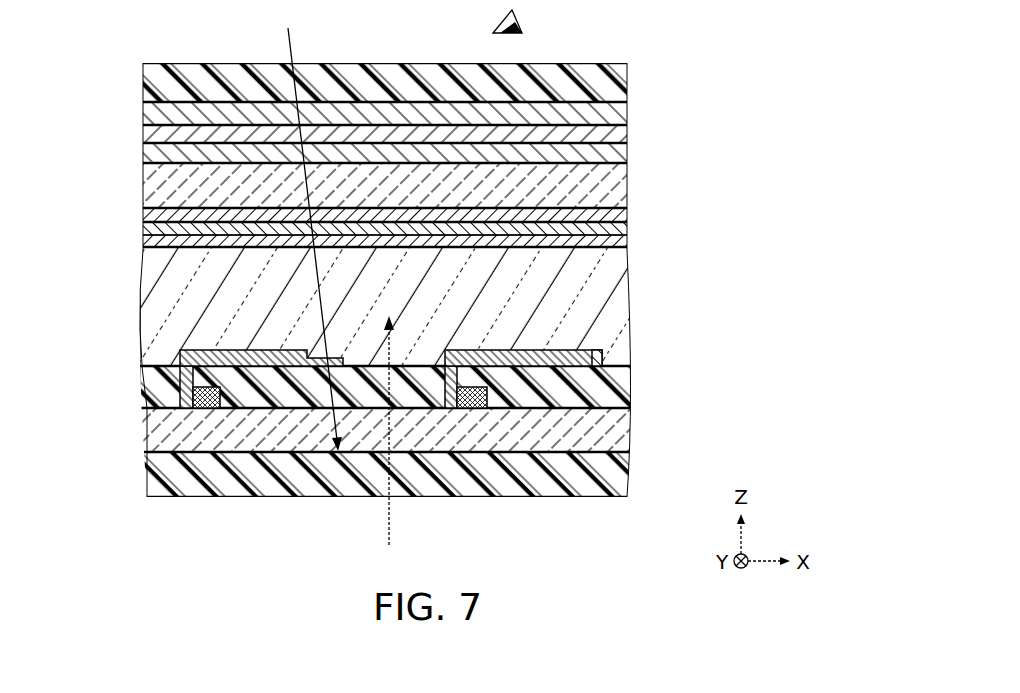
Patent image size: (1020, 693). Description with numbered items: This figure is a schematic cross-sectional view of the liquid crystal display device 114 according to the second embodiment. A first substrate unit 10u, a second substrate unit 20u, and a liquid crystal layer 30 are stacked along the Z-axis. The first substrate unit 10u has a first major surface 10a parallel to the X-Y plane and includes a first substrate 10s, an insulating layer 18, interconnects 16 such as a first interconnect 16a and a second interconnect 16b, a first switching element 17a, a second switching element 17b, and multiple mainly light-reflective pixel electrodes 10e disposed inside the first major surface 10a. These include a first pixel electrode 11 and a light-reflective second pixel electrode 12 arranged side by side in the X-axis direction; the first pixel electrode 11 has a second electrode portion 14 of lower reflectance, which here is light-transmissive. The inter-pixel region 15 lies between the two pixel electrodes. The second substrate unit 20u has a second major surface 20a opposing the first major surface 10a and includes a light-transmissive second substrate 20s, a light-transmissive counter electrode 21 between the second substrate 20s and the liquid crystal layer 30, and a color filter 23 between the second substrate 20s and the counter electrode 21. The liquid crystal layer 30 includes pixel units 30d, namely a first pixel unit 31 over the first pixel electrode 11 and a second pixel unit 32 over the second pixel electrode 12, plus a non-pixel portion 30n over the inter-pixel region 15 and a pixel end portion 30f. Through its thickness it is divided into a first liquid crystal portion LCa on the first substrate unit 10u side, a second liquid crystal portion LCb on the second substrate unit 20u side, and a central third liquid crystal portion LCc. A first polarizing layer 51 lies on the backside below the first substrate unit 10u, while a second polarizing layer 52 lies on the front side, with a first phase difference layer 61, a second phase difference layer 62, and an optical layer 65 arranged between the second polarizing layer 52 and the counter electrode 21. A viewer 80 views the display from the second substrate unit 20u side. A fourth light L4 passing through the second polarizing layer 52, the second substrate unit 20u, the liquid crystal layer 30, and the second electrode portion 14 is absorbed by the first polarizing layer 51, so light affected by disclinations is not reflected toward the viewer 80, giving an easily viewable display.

The second polarizing layer 52 is at (625, 73).
The second phase difference layer 62 is at (625, 110).
The optical layer 65 is at (625, 134).
The first phase difference layer 61 is at (625, 153).
The second substrate 20s is at (610, 188).
The second major surface 20a is at (162, 213).
The counter electrode 21 is at (625, 232).
The second substrate unit 20u is at (708, 177).
The color filter 23 is at (200, 197).
The liquid crystal layer 30 is at (708, 262).
The first liquid crystal portion LCa is at (558, 335).
The second liquid crystal portion LCb is at (556, 257).
The third liquid crystal portion LCc is at (560, 298).
The second pixel electrode 12 is at (600, 352).
The pixel electrodes 10e is at (386, 415).
The insulating layer 18 is at (625, 400).
The first substrate 10s is at (620, 440).
The first substrate unit 10u is at (708, 348).
The first polarizing layer 51 is at (620, 470).
The first pixel unit 31 is at (250, 333).
The pixel units 30d is at (353, 461).
The first major surface 10a is at (178, 370).
The first pixel electrode 11 is at (150, 409).
The first switching element 17a is at (188, 410).
The first interconnect 16a is at (210, 410).
The interconnects 16 is at (374, 482).
The second electrode portion 14 is at (317, 400).
The inter-pixel region 15 is at (406, 420).
The pixel end portion 30f is at (340, 312).
The non-pixel portion 30n is at (393, 446).
The second switching element 17b is at (462, 408).
The second interconnect 16b is at (478, 408).
The second pixel unit 32 is at (545, 368).
The fourth light L4 is at (290, 42).
The viewer 80 is at (523, 22).
The liquid crystal display device 114 is at (745, 125).